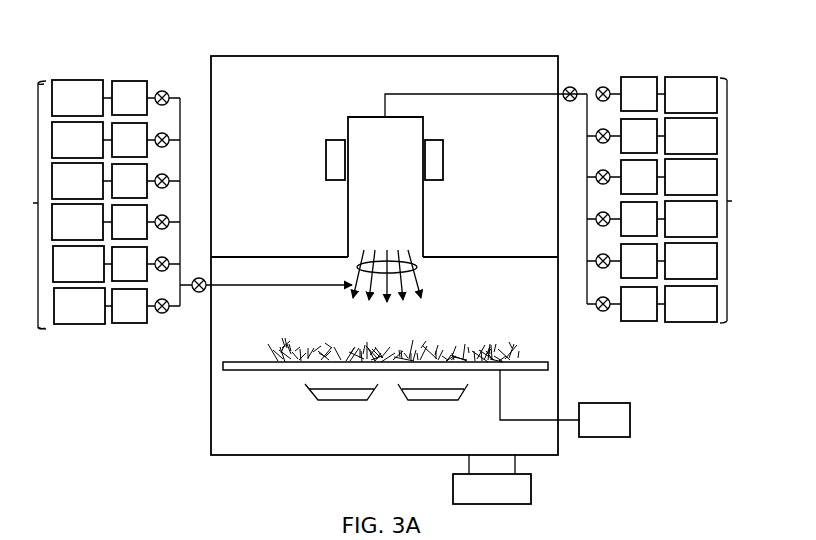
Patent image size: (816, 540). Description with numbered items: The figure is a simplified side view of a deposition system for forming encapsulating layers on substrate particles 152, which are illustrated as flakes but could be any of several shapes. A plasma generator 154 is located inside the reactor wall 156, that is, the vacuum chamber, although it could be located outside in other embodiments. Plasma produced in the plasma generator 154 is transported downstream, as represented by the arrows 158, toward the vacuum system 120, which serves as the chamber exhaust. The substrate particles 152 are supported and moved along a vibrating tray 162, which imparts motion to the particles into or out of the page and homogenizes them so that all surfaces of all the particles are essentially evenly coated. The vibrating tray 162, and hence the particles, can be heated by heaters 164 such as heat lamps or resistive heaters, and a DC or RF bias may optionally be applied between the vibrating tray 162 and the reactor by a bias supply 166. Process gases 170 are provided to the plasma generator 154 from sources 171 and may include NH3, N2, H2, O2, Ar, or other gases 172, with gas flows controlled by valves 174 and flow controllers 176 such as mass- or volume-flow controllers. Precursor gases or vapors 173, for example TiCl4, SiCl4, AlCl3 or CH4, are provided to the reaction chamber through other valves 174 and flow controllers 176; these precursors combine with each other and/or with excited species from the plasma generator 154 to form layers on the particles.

The vacuum system 120 is at (531, 488).
The substrate particles 152 is at (395, 346).
The plasma generator 154 is at (462, 160).
The reactor wall 156 is at (482, 56).
The arrows 158 is at (417, 267).
The vibrating tray 162 is at (262, 372).
The heaters 164 is at (410, 403).
The bias supply 166 is at (630, 420).
The process gases 170 is at (427, 94).
The sources 171 is at (714, 200).
The other gases 172 is at (694, 322).
The precursor gases or vapors 173 is at (57, 204).
The valves 174 is at (159, 89).
The flow controllers 176 is at (126, 78).